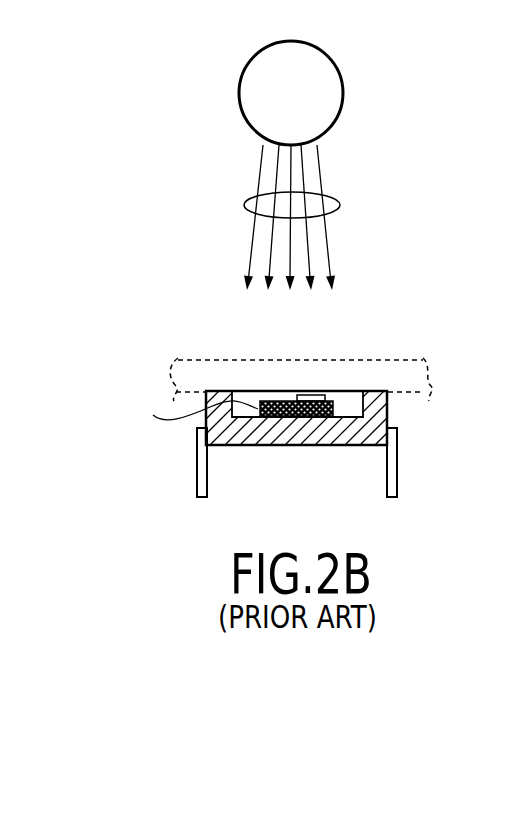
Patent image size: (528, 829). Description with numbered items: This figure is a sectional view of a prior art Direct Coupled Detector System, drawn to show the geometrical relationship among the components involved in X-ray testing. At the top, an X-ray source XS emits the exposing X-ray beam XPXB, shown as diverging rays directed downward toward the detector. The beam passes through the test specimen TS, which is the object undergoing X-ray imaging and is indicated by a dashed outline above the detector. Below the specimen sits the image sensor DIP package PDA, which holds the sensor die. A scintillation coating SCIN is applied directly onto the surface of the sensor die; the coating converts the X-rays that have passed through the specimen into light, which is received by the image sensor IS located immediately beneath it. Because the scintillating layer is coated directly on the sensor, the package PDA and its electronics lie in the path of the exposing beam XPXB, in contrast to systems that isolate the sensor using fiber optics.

The X-ray source XS is at (328, 56).
The exposing X-ray beam XPXB is at (340, 206).
The test specimen TS is at (352, 360).
The image sensor IS is at (191, 414).
The scintillation coating SCIN is at (330, 398).
The image sensor DIP package PDA is at (397, 466).